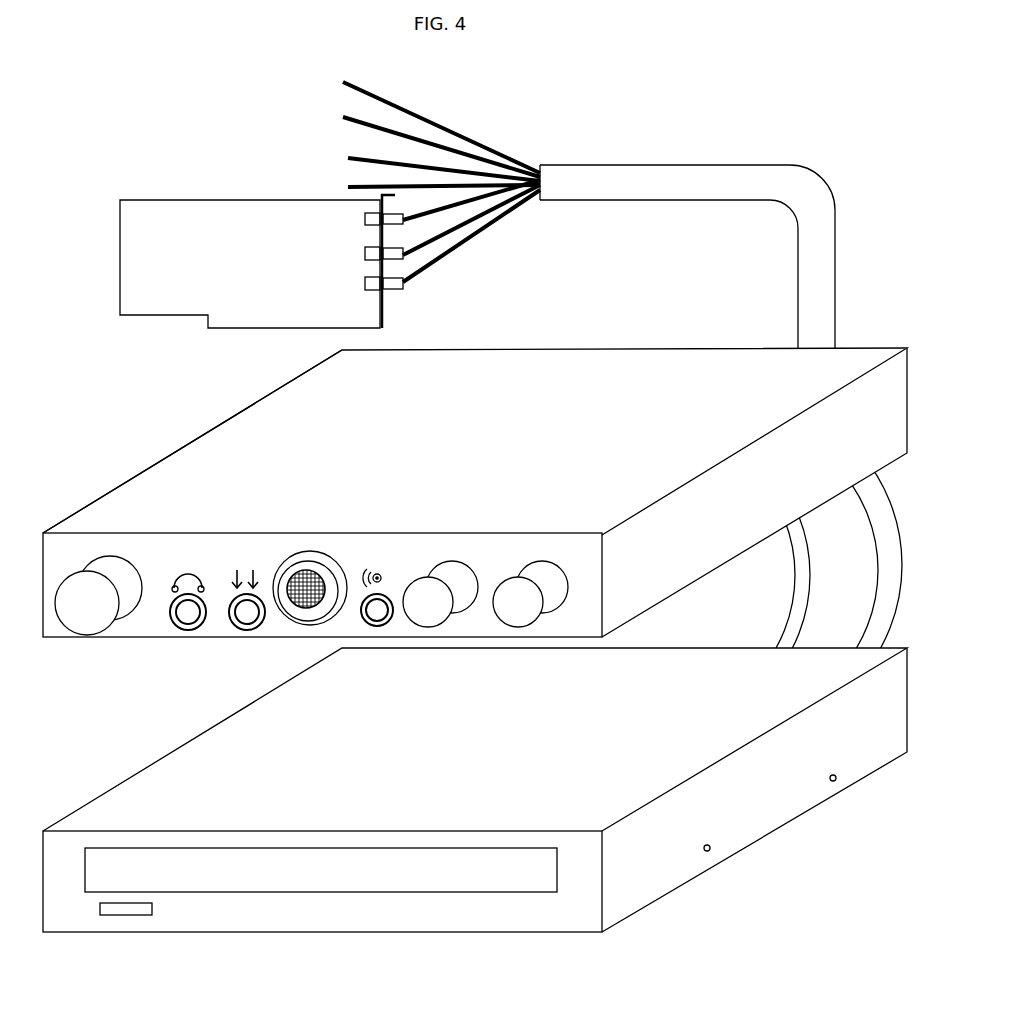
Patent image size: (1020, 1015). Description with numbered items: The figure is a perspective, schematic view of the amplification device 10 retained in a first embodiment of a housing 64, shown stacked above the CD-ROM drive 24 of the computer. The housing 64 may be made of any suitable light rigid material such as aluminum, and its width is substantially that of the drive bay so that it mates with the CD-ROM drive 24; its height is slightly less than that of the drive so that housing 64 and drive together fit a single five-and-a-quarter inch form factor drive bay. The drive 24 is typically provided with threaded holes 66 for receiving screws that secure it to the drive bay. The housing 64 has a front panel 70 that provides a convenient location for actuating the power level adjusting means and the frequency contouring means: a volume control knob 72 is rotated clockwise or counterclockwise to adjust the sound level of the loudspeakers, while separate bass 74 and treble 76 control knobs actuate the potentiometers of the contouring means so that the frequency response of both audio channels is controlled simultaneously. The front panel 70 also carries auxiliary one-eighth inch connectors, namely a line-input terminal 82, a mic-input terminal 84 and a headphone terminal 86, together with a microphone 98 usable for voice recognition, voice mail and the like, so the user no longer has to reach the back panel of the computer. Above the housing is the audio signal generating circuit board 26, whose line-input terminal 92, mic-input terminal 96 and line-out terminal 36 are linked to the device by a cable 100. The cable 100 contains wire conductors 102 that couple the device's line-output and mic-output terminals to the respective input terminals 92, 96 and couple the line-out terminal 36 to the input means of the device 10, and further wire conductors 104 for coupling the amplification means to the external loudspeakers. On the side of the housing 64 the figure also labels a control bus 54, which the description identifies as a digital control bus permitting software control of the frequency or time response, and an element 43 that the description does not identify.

The amplification device 10 is at (197, 427).
The CD-ROM drive 24 is at (660, 875).
The audio signal generating circuit board 26 is at (268, 193).
The line-out terminal 36 is at (362, 283).
The speaker opening arc 43 is at (792, 578).
The digital control bus 54 is at (875, 562).
The housing 64 is at (557, 365).
The threaded holes 66 is at (720, 848).
The front panel 70 is at (143, 633).
The volume control knob 72 is at (140, 562).
The bass control knob 74 is at (563, 562).
The treble control knob 76 is at (482, 567).
The line-input terminal 82 is at (260, 590).
The mic-input terminal 84 is at (382, 587).
The headphone terminal 86 is at (207, 595).
The line-input terminal of the audio circuitry 92 is at (362, 220).
The mic-input terminal of the audio circuitry 96 is at (362, 256).
The microphone 98 is at (332, 550).
The cable 100 is at (727, 173).
The wire conductors 102 is at (430, 270).
The wire conductors 104 is at (340, 188).